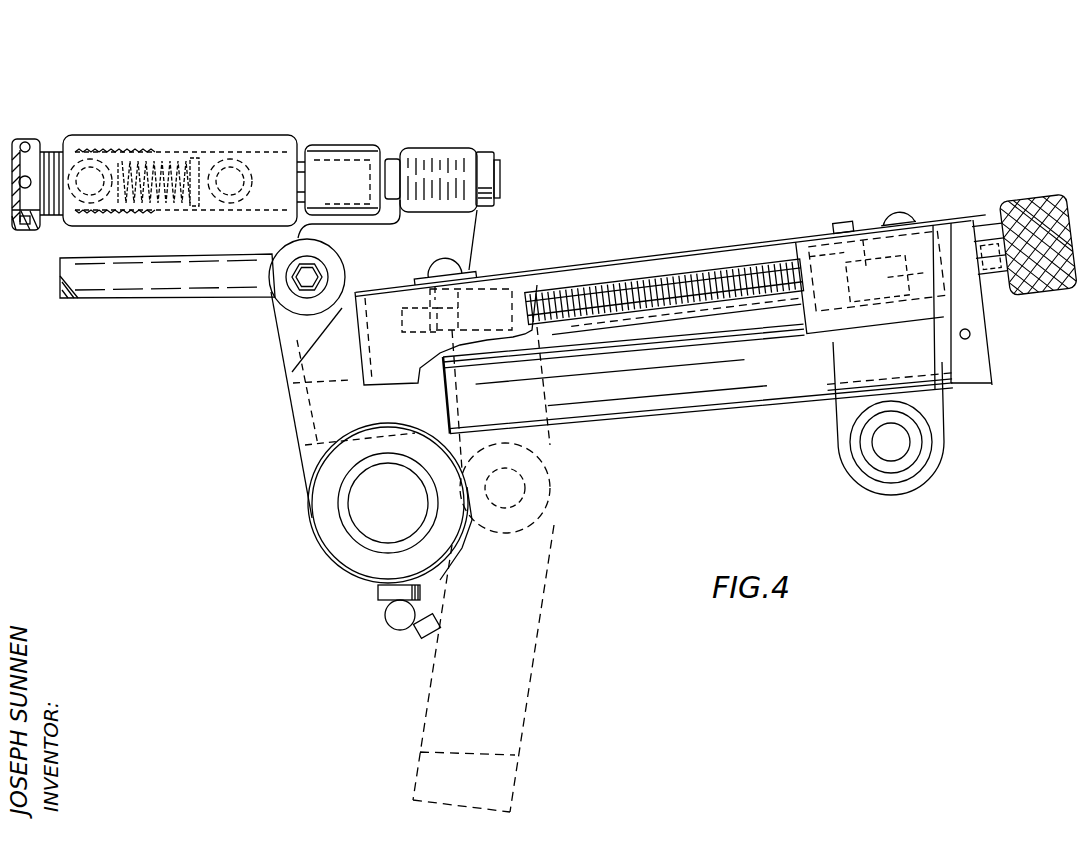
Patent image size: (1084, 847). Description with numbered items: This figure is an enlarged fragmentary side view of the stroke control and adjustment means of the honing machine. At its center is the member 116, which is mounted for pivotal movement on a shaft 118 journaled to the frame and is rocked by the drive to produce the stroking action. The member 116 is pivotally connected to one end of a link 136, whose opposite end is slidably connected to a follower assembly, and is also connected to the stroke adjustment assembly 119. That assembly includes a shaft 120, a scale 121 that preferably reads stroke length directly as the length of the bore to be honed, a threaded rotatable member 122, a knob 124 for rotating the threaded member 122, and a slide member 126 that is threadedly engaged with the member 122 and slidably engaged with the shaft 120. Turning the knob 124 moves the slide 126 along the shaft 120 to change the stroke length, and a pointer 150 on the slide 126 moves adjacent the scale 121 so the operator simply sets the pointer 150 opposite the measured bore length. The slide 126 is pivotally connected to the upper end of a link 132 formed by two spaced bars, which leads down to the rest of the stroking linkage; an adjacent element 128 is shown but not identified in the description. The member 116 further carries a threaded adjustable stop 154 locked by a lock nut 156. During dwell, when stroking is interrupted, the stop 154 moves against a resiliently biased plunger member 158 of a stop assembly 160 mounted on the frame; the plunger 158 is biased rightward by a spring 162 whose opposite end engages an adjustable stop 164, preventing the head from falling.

The member 116 is at (469, 257).
The shaft 118 is at (370, 516).
The stroke adjustment assembly 119 is at (653, 250).
The shaft 120 is at (653, 400).
The scale 121 is at (733, 244).
The threaded rotatable member 122 is at (707, 316).
The knob 124 is at (1023, 197).
The slide member 126 is at (937, 402).
The plate 128 is at (882, 324).
The link 132 is at (515, 697).
The link 136 is at (178, 290).
The pointer 150 is at (858, 212).
The threaded adjustable stop 154 is at (392, 158).
The lock nut 156 is at (480, 150).
The resiliently biased plunger member 158 is at (338, 148).
The stop assembly 160 is at (190, 140).
The spring 162 is at (148, 170).
The adjustable stop 164 is at (45, 147).